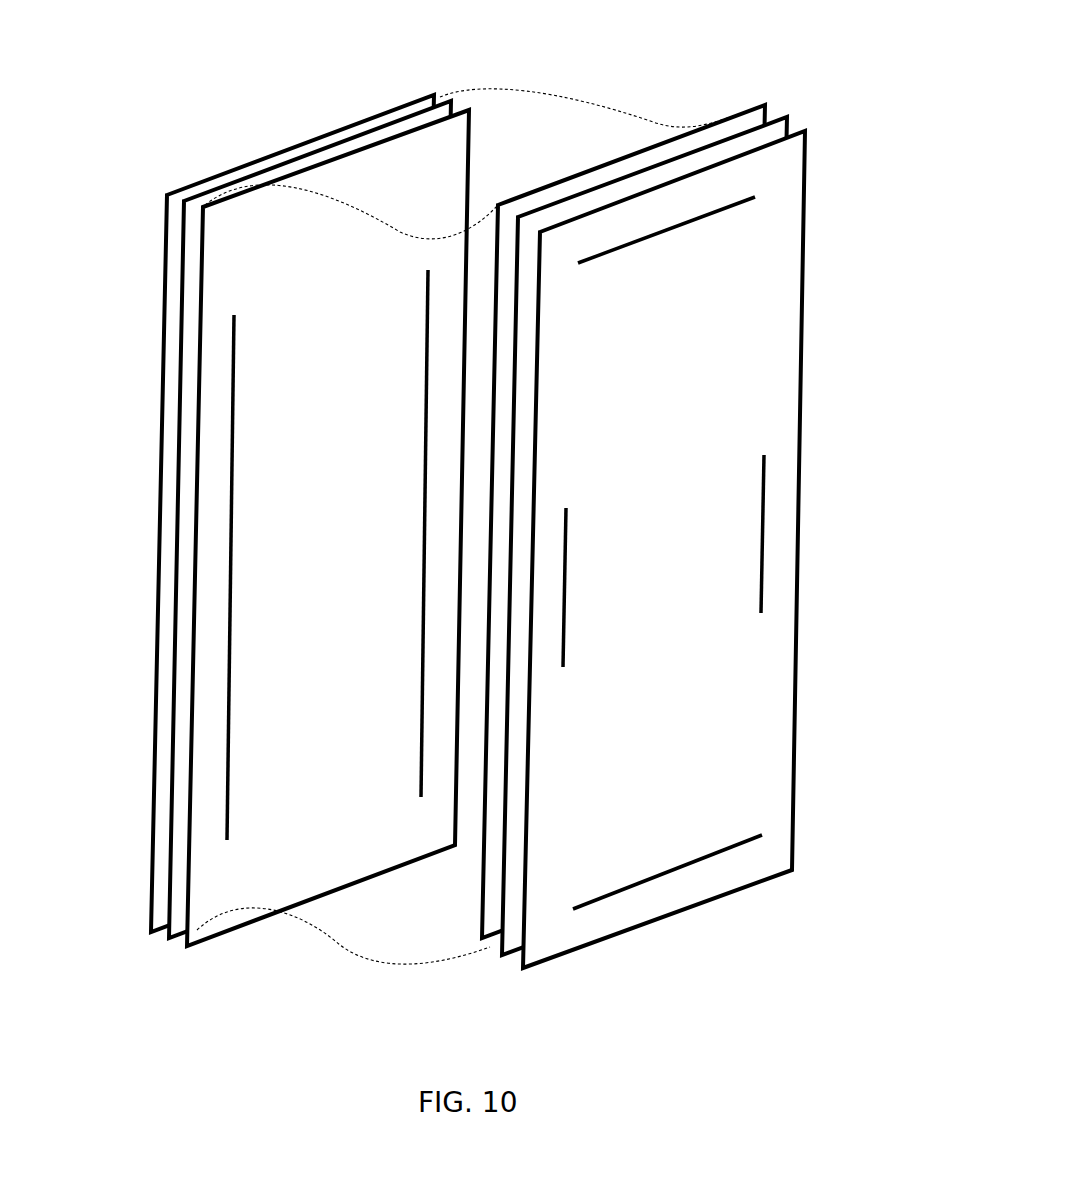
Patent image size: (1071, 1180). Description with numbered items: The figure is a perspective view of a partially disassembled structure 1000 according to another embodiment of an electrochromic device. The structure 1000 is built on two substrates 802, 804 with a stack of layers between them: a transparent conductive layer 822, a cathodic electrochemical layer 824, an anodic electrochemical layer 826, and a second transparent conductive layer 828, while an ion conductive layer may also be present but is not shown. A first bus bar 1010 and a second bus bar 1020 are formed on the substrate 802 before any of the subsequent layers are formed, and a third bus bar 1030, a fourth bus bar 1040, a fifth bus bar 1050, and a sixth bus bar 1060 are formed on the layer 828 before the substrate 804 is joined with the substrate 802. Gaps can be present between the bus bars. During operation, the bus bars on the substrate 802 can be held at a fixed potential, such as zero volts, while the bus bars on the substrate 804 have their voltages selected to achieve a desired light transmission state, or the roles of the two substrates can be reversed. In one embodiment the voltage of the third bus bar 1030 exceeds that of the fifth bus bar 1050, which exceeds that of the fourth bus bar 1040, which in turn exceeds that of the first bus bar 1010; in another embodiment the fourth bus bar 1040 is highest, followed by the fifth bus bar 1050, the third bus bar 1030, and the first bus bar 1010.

The partially disassembled structure 1000 is at (490, 487).
The substrate 802 is at (160, 453).
The transparent conductive layer 822 is at (183, 270).
The cathodic electrochemical layer 824 is at (190, 773).
The anodic electrochemical layer 826 is at (652, 157).
The transparent conductive layer 828 is at (772, 132).
The substrate 804 is at (805, 402).
The first bus bar 1010 is at (242, 380).
The second bus bar 1020 is at (422, 563).
The third bus bar 1030 is at (678, 227).
The fourth bus bar 1040 is at (687, 858).
The fifth bus bar 1050 is at (576, 565).
The sixth bus bar 1060 is at (753, 523).